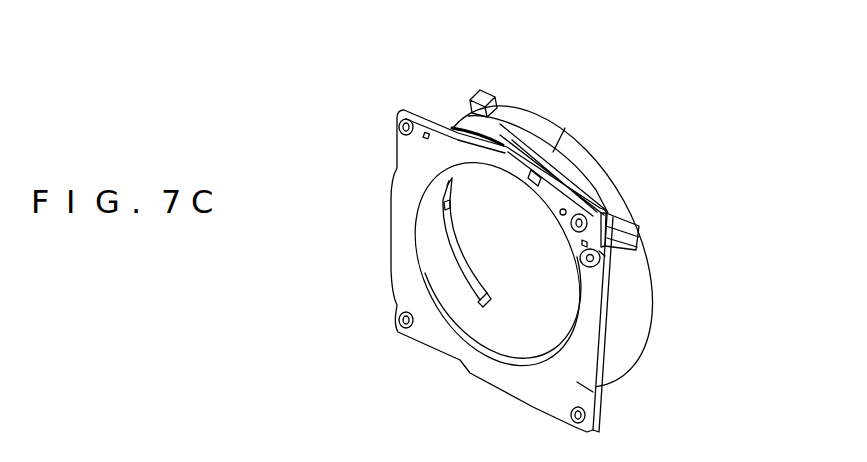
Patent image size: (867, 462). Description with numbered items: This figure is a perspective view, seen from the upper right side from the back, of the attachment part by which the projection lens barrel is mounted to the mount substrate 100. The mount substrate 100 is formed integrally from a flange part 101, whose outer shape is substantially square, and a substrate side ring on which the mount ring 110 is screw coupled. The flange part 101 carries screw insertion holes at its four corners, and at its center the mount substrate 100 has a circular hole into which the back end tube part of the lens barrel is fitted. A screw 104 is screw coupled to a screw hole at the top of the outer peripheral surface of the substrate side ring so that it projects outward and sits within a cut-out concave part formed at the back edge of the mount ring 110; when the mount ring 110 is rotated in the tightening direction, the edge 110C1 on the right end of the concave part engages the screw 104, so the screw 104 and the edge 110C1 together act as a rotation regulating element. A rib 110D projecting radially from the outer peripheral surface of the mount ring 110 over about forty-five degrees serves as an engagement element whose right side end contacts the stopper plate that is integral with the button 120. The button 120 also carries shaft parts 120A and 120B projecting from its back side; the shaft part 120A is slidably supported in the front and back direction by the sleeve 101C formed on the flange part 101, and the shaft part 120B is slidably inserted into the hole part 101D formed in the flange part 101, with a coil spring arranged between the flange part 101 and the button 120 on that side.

The mount substrate 100 is at (415, 93).
The flange part 101 is at (593, 394).
The sleeve 101C is at (600, 252).
The hole part 101D is at (620, 213).
The screw 104 is at (508, 135).
The mount ring 110 is at (642, 176).
The edge on the right end of the concave part 110C1 is at (522, 148).
The rib 110D is at (556, 146).
The button 120 is at (624, 235).
The shaft part 120A is at (594, 268).
The shaft part 120B is at (622, 231).